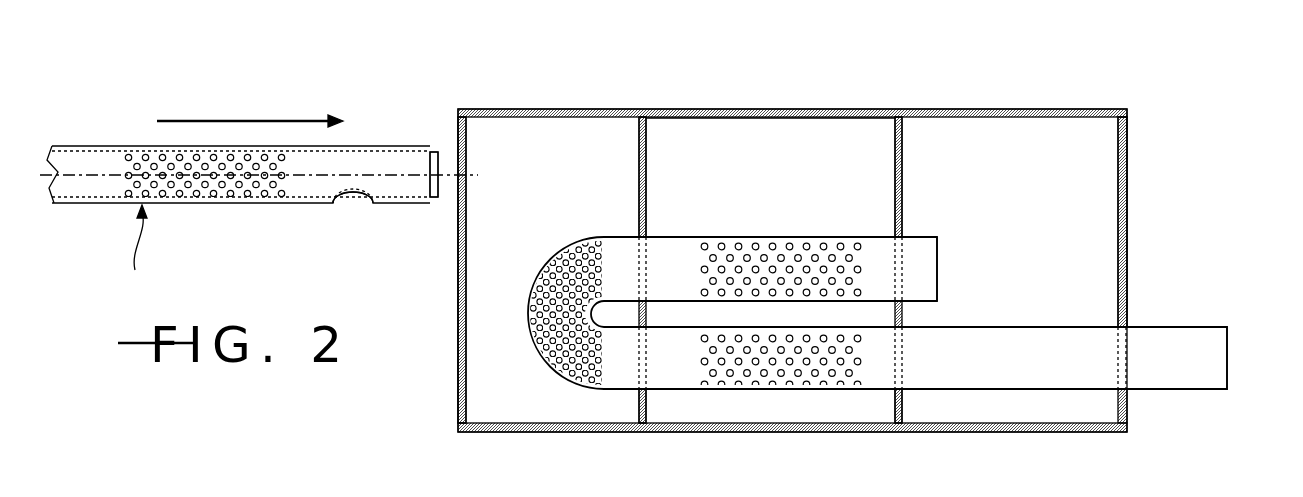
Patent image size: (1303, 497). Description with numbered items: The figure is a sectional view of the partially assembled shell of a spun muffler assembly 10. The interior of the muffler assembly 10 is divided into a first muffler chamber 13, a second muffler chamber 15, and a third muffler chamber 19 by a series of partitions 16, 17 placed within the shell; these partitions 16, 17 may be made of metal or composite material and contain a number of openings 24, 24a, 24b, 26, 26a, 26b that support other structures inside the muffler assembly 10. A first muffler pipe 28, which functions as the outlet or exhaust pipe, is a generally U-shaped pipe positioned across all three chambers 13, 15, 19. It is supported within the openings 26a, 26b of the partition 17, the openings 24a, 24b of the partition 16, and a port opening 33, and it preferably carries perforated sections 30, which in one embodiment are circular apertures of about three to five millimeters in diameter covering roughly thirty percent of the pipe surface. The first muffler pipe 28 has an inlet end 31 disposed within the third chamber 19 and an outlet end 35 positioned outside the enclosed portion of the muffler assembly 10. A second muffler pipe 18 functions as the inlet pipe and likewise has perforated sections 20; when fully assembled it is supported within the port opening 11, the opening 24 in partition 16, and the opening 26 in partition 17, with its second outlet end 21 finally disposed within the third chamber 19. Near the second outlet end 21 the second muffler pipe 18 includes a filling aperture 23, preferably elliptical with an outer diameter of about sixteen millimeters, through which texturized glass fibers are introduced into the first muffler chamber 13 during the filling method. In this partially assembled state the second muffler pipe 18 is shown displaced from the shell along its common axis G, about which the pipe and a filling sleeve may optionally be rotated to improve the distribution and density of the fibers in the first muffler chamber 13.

The common axis G is at (90, 176).
The spun muffler assembly 10 is at (790, 95).
The port opening 11 is at (457, 157).
The first muffler chamber 13 is at (484, 360).
The second muffler chamber 15 is at (745, 153).
The partition 16 is at (647, 133).
The partition 17 is at (893, 130).
The second muffler pipe 18 is at (135, 253).
The third muffler chamber 19 is at (1077, 150).
The perforated sections 20 is at (182, 194).
The second outlet end 21 is at (430, 147).
The filling aperture 23 is at (350, 200).
The opening 24 is at (638, 175).
The opening 24a is at (647, 235).
The opening 24b is at (646, 390).
The opening 26 is at (903, 163).
The opening 26a is at (902, 235).
The opening 26b is at (902, 391).
The first muffler pipe 28 is at (617, 394).
The perforated sections 30 is at (803, 282).
The inlet end 31 is at (938, 267).
The port opening 33 is at (1127, 390).
The outlet end 35 is at (1170, 327).